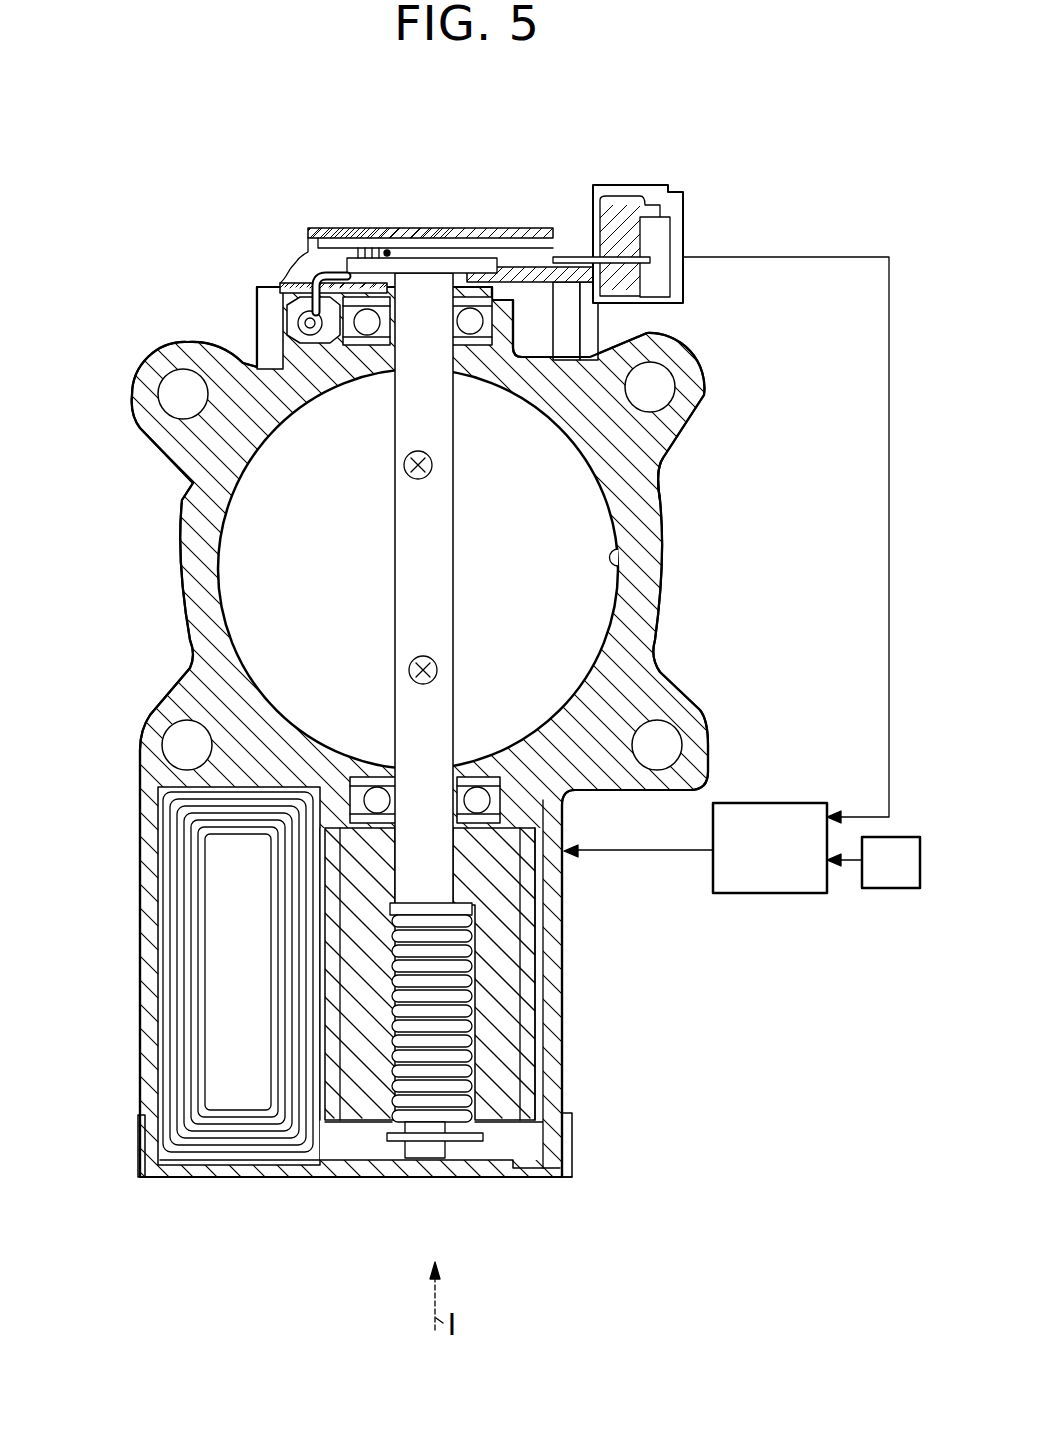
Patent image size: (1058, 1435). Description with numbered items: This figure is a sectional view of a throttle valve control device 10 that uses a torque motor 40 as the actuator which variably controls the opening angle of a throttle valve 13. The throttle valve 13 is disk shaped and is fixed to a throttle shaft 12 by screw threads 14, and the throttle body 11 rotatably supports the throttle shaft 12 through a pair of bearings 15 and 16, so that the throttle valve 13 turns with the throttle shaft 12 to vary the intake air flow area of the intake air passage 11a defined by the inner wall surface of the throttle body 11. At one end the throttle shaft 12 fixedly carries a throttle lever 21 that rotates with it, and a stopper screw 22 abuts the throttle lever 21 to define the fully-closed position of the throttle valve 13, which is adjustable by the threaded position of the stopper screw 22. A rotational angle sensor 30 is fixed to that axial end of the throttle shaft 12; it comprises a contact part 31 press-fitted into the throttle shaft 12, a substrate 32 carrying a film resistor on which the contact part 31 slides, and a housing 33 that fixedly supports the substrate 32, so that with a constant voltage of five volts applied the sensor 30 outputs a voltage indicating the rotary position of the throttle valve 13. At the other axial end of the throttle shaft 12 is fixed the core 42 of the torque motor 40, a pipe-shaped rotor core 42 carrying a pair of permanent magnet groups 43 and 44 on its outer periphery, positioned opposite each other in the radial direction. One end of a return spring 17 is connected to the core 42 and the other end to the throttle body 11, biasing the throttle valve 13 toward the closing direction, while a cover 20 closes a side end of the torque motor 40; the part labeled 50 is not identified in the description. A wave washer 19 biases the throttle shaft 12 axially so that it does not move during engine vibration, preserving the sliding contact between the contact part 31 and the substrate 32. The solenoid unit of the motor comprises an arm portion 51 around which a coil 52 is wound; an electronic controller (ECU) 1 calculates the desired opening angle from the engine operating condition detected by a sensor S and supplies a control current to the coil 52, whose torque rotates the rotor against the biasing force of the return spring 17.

The electronic controller (ECU) 1 is at (785, 896).
The throttle valve control device 10 is at (662, 495).
The throttle body 11 is at (666, 690).
The intake air passage 11a is at (622, 557).
The throttle shaft 12 is at (400, 575).
The throttle valve 13 is at (597, 600).
The screw threads 14 is at (404, 470).
The bearing 15 is at (492, 317).
The bearing 16 is at (502, 790).
The return spring 17 is at (470, 1045).
The wave washer 19 is at (648, 463).
The cover 20 is at (150, 1178).
The throttle lever 21 is at (308, 303).
The stopper screw 22 is at (296, 318).
The rotational angle sensor 30 is at (445, 222).
The contact part 31 is at (450, 240).
The substrate 32 is at (353, 242).
The housing 33 is at (617, 185).
The torque motor 40 is at (573, 1107).
The rotor core 42 is at (343, 883).
The permanent magnet group 43 is at (573, 1132).
The permanent magnet group 44 is at (330, 1067).
The end plate 50 is at (320, 1167).
The arm portion 51 is at (213, 963).
The coil 52 is at (180, 1043).